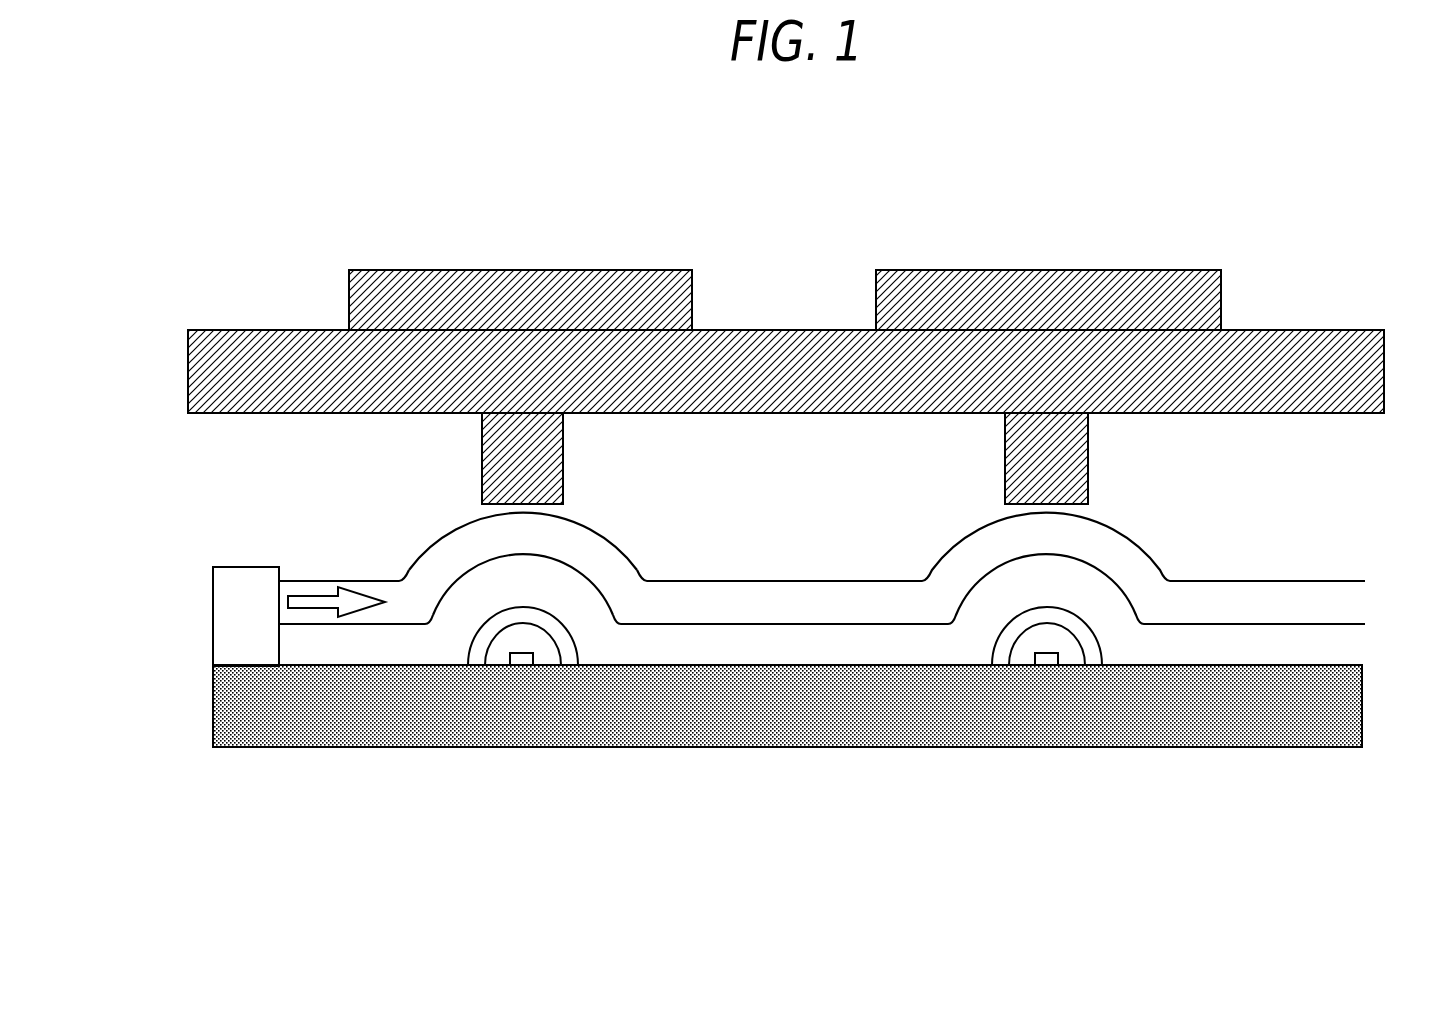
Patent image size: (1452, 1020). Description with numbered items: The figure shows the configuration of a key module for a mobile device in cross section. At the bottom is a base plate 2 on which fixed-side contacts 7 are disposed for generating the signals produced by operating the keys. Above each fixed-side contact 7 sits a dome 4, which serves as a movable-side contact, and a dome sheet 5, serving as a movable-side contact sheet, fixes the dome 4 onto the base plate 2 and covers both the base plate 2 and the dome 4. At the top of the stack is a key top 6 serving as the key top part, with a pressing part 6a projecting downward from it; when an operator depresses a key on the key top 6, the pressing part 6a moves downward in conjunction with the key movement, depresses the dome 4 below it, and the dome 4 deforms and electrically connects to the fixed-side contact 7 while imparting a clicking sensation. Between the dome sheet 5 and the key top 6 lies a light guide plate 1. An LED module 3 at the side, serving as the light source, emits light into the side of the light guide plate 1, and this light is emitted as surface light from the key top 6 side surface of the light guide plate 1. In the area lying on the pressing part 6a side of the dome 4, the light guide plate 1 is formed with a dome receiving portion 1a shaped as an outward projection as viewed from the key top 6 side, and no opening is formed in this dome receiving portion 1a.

The light guide plate 1 is at (863, 571).
The dome receiving portion 1a is at (437, 540).
The base plate 2 is at (493, 750).
The LED module 3 is at (213, 632).
The dome 4 is at (1015, 628).
The dome sheet 5 is at (1288, 623).
The key top 6 is at (452, 270).
The pressing part 6a is at (563, 451).
The fixed-side contact 7 is at (1045, 652).